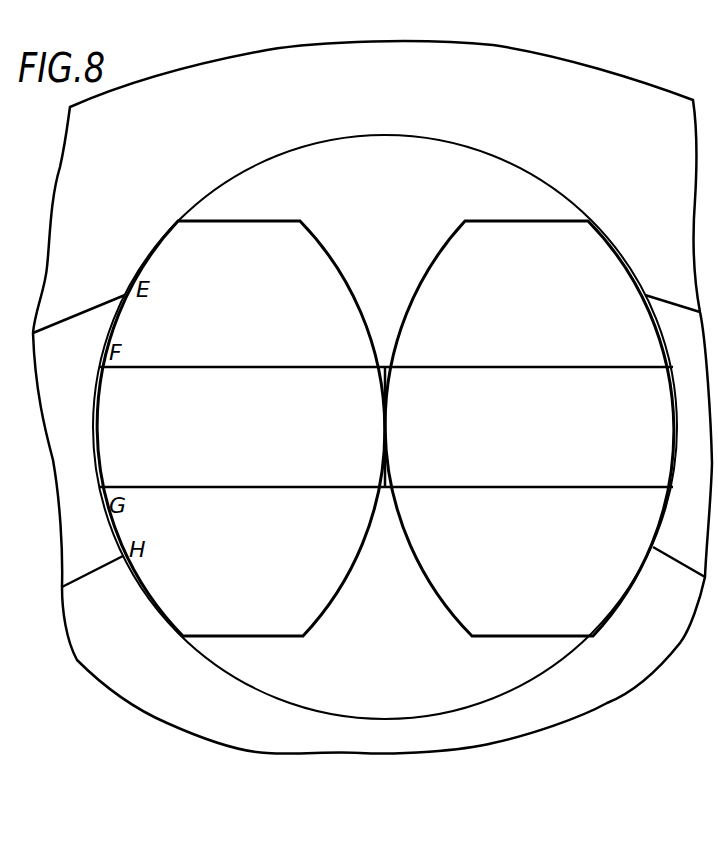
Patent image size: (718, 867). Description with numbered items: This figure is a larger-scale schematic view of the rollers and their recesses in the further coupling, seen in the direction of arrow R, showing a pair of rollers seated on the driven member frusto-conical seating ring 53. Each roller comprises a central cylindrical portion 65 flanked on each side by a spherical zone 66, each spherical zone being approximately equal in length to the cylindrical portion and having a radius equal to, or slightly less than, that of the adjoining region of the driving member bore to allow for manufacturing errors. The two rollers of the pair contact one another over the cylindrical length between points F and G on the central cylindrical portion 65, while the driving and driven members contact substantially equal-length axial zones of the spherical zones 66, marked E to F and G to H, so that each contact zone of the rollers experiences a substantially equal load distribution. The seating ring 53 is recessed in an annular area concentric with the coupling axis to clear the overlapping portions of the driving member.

The frusto-conical seating ring 53 is at (391, 100).
The central cylindrical portion 65 is at (422, 478).
The spherical zone 66 is at (562, 342).